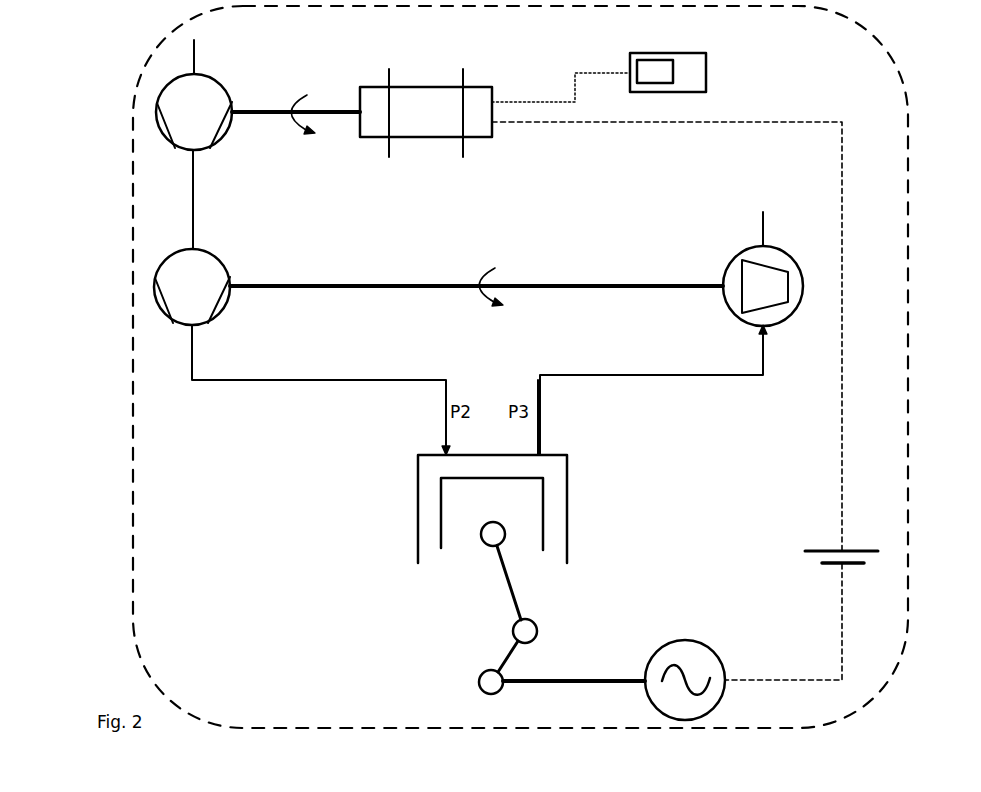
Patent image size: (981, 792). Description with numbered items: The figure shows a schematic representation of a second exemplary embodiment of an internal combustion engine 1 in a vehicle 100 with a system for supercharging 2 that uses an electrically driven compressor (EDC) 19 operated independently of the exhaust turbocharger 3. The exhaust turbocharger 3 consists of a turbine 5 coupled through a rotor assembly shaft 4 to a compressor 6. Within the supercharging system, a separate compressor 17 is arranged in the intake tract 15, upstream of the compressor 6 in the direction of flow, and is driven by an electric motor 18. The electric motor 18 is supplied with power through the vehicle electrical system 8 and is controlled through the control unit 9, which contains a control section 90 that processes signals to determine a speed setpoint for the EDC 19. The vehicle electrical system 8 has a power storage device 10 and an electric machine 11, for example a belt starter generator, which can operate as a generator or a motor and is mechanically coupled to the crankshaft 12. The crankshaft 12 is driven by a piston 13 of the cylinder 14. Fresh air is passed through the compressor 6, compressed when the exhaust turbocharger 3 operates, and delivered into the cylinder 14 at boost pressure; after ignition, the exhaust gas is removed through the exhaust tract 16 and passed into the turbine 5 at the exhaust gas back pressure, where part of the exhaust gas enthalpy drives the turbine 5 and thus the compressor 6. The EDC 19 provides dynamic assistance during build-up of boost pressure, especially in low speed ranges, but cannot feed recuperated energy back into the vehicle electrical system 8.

The vehicle 100 is at (133, 153).
The system for supercharging 2 is at (64, 216).
The internal combustion engine 1 is at (172, 529).
The separate compressor 17 is at (210, 80).
The compressor 6 is at (152, 285).
The electrically driven compressor 19 is at (256, 123).
The electric motor 18 is at (407, 88).
The control unit 9 is at (703, 53).
The control section 90 is at (645, 61).
The exhaust turbocharger 3 is at (294, 277).
The rotor assembly shaft 4 is at (398, 285).
The turbine 5 is at (793, 260).
The exhaust tract 16 is at (678, 375).
The cylinder 14 is at (418, 487).
The piston 13 is at (441, 537).
The intake tract 15 is at (243, 453).
The crankshaft 12 is at (567, 679).
The electric machine 11 is at (689, 641).
The vehicle electrical system 8 is at (842, 373).
The power storage device 10 is at (843, 550).